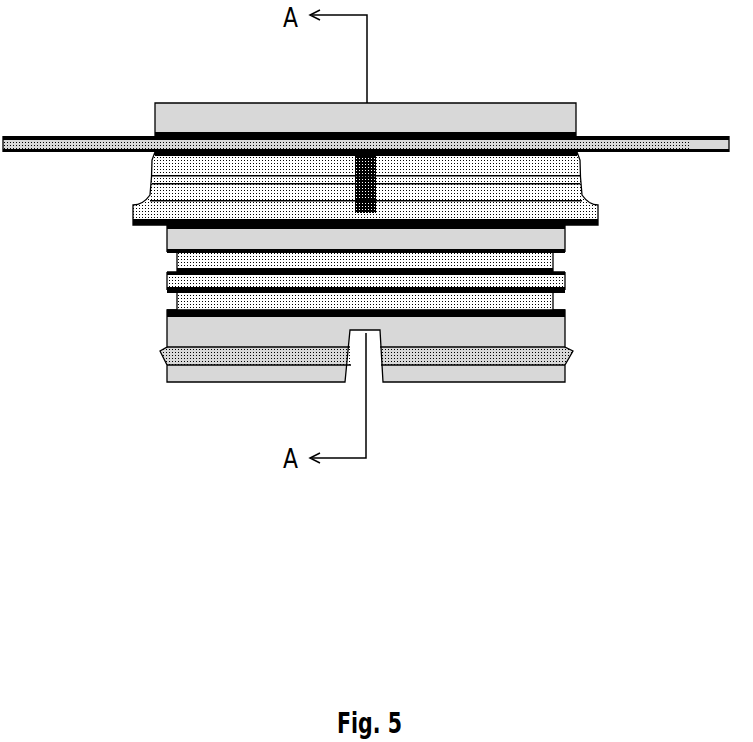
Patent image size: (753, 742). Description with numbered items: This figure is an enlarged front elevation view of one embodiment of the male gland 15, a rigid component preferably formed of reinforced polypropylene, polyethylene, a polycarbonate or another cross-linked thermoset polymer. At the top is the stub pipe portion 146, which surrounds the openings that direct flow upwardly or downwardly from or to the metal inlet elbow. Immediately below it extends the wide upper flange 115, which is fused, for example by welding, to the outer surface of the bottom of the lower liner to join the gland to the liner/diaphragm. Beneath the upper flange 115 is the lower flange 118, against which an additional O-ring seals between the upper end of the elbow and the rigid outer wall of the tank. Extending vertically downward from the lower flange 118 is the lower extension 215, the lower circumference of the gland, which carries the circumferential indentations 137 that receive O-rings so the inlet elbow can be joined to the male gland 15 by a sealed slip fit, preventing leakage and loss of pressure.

The stub pipe portion 146 is at (577, 115).
The upper flange 115 is at (644, 135).
The lower flange 118 is at (599, 211).
The male gland 15 is at (566, 280).
The circumferential indentations 137 is at (177, 300).
The lower extension 215 is at (167, 331).